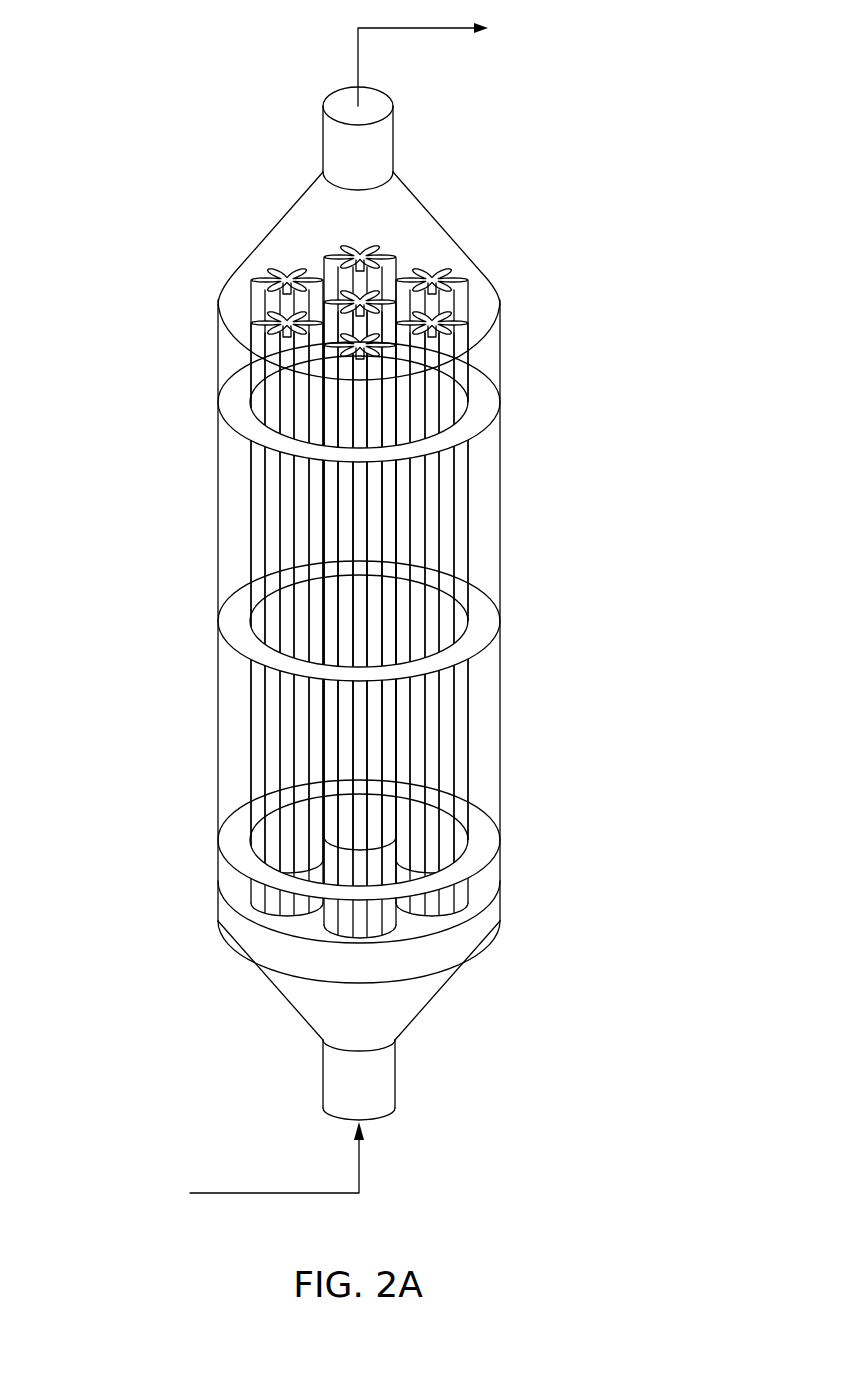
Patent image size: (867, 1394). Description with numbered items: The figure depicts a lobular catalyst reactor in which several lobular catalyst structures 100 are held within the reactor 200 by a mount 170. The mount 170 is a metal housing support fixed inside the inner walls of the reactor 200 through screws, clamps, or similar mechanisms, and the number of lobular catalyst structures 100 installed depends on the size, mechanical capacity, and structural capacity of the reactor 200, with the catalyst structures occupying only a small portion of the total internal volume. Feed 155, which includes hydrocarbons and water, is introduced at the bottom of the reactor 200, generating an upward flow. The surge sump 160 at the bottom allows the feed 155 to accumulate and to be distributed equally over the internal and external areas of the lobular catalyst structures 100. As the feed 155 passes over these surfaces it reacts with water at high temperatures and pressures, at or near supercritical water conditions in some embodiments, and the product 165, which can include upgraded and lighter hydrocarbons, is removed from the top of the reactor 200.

The reactor 200 is at (124, 80).
The lobular catalyst structure 100 is at (364, 535).
The mount 170 is at (232, 392).
The surge sump 160 is at (405, 998).
The product 165 is at (430, 30).
The feed 155 is at (257, 1193).